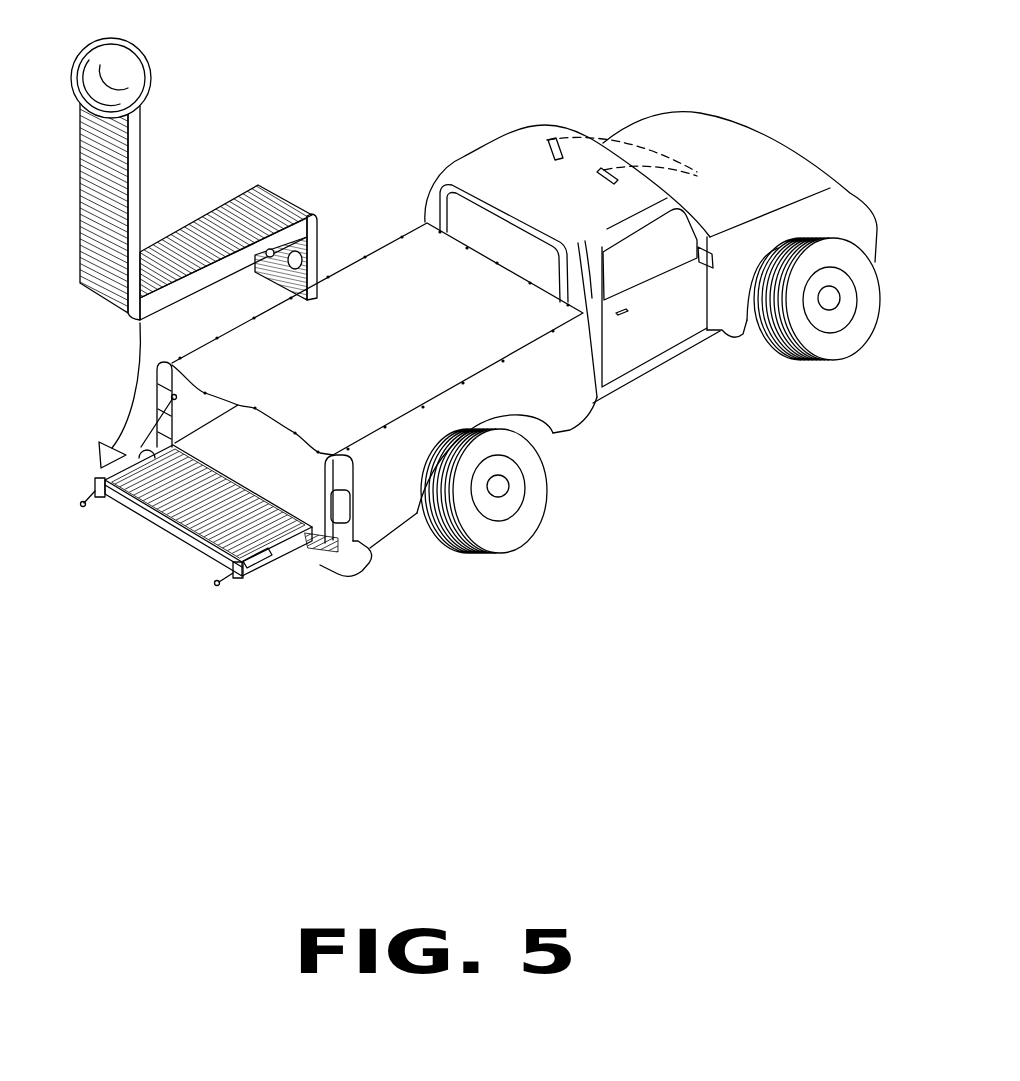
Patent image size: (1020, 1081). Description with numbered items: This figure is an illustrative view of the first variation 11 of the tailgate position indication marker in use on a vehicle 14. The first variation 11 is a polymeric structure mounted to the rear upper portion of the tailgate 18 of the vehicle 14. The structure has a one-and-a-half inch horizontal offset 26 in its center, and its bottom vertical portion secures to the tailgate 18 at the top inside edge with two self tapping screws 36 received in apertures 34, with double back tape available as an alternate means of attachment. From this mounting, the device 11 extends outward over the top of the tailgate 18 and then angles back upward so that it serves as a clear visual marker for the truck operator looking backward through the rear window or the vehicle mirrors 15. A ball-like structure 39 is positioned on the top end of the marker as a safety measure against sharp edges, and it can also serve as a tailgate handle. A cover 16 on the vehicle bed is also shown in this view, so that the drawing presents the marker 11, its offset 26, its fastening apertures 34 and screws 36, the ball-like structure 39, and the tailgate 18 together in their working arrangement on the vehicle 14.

The first embodiment/variation 11 is at (152, 93).
The vehicle 14 is at (507, 157).
The vehicle mirrors 15 is at (713, 247).
The cover 16 is at (398, 360).
The tailgate 18 is at (268, 558).
The horizontal offset 26 is at (243, 193).
The apertures 34 is at (296, 258).
The self tapping screws 36 is at (100, 480).
The ball-like structure 39 is at (143, 48).